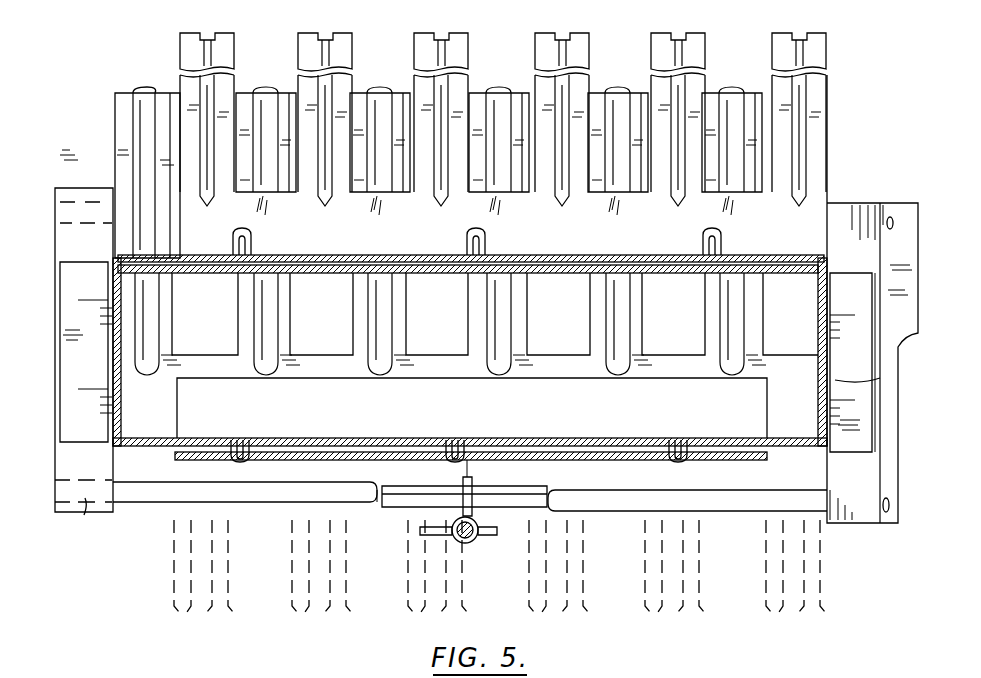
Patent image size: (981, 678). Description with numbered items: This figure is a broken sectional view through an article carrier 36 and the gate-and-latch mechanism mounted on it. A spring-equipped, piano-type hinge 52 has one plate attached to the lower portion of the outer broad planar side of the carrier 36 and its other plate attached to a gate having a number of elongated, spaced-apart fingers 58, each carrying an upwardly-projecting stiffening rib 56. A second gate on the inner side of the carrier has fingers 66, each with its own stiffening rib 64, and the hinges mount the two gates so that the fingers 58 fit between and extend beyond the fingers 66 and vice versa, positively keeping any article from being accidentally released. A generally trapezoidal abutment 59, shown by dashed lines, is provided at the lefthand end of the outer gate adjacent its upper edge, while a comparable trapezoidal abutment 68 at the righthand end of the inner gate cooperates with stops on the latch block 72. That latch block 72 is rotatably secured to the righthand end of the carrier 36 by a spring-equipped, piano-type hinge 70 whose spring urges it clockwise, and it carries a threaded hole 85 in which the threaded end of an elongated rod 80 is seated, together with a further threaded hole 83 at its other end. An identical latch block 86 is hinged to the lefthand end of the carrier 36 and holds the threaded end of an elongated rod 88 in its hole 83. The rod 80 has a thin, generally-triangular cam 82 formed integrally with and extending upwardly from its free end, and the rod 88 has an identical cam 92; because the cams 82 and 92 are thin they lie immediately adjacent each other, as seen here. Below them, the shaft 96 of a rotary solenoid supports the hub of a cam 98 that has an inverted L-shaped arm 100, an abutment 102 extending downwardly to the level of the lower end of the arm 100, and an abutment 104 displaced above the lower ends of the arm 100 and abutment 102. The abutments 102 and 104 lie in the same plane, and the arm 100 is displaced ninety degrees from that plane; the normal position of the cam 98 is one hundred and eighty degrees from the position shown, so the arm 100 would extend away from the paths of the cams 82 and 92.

The carrier 36 is at (137, 452).
The spring-equipped, piano-type hinge 52 is at (545, 388).
The stiffening rib 56 is at (130, 90).
The finger 58 is at (116, 105).
The abutment 59 is at (62, 425).
The stiffening rib 64 is at (213, 55).
The finger 66 is at (181, 47).
The abutment 68 is at (860, 300).
The spring-equipped, piano-type hinge 70 is at (845, 380).
The latch block 72 is at (882, 200).
The elongated rod 80 is at (727, 510).
The cam 82 is at (520, 486).
The threaded hole 83 is at (892, 216).
The threaded hole 85 is at (80, 200).
The latch block 86 is at (68, 515).
The elongated rod 88 is at (255, 500).
The cam 92 is at (392, 508).
The shaft 96 is at (468, 545).
The cam 98 is at (458, 540).
The inverted L-shaped arm 100 is at (469, 472).
The abutment 102 is at (484, 535).
The abutment 104 is at (430, 534).